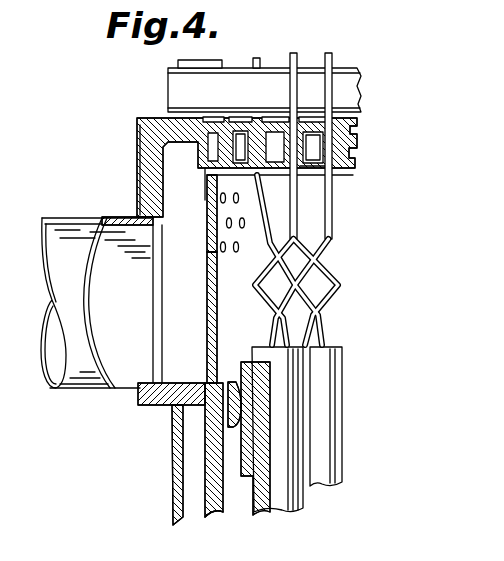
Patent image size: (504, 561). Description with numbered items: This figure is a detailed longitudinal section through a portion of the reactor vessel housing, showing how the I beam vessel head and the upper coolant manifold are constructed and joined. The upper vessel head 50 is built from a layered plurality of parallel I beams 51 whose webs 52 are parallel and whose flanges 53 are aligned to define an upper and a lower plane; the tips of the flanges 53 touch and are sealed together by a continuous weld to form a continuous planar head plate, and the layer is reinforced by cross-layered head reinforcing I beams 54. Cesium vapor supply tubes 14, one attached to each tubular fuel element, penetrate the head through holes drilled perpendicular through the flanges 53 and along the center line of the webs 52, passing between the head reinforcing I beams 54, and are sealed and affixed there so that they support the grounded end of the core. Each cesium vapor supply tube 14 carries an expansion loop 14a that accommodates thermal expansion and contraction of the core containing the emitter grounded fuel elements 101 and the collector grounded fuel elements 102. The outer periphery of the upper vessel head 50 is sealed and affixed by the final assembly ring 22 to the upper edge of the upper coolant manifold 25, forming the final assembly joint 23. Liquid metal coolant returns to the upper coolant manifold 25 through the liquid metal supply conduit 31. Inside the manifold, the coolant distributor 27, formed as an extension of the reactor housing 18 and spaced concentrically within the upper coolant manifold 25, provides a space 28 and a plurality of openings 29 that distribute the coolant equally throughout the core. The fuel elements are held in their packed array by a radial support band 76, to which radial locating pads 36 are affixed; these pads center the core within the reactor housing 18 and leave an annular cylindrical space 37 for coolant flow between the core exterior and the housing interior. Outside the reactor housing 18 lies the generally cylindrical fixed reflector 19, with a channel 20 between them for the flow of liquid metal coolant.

The cesium vapor supply tube 14 is at (333, 226).
The expansion loop 14a is at (350, 262).
The reactor housing 18 is at (210, 518).
The fixed reflector 19 is at (172, 468).
The channel 20 is at (193, 495).
The final assembly ring 22 is at (140, 117).
The final assembly joint 23 is at (137, 164).
The upper coolant manifold 25 is at (140, 196).
The coolant distributor 27 is at (208, 314).
The space 28 is at (216, 174).
The openings 29 is at (228, 252).
The liquid metal supply conduit 31 is at (50, 217).
The radial locating pad 36 is at (208, 380).
The annular cylindrical space 37 is at (238, 490).
The upper vessel head 50 is at (168, 90).
The I beam 51 is at (344, 148).
The web 52 is at (342, 137).
The flanges 53 is at (316, 166).
The head reinforcing I beam 54 is at (276, 67).
The radial support band 76 is at (233, 390).
The emitter grounded fuel element 101 is at (290, 509).
The collector grounded fuel element 102 is at (325, 487).